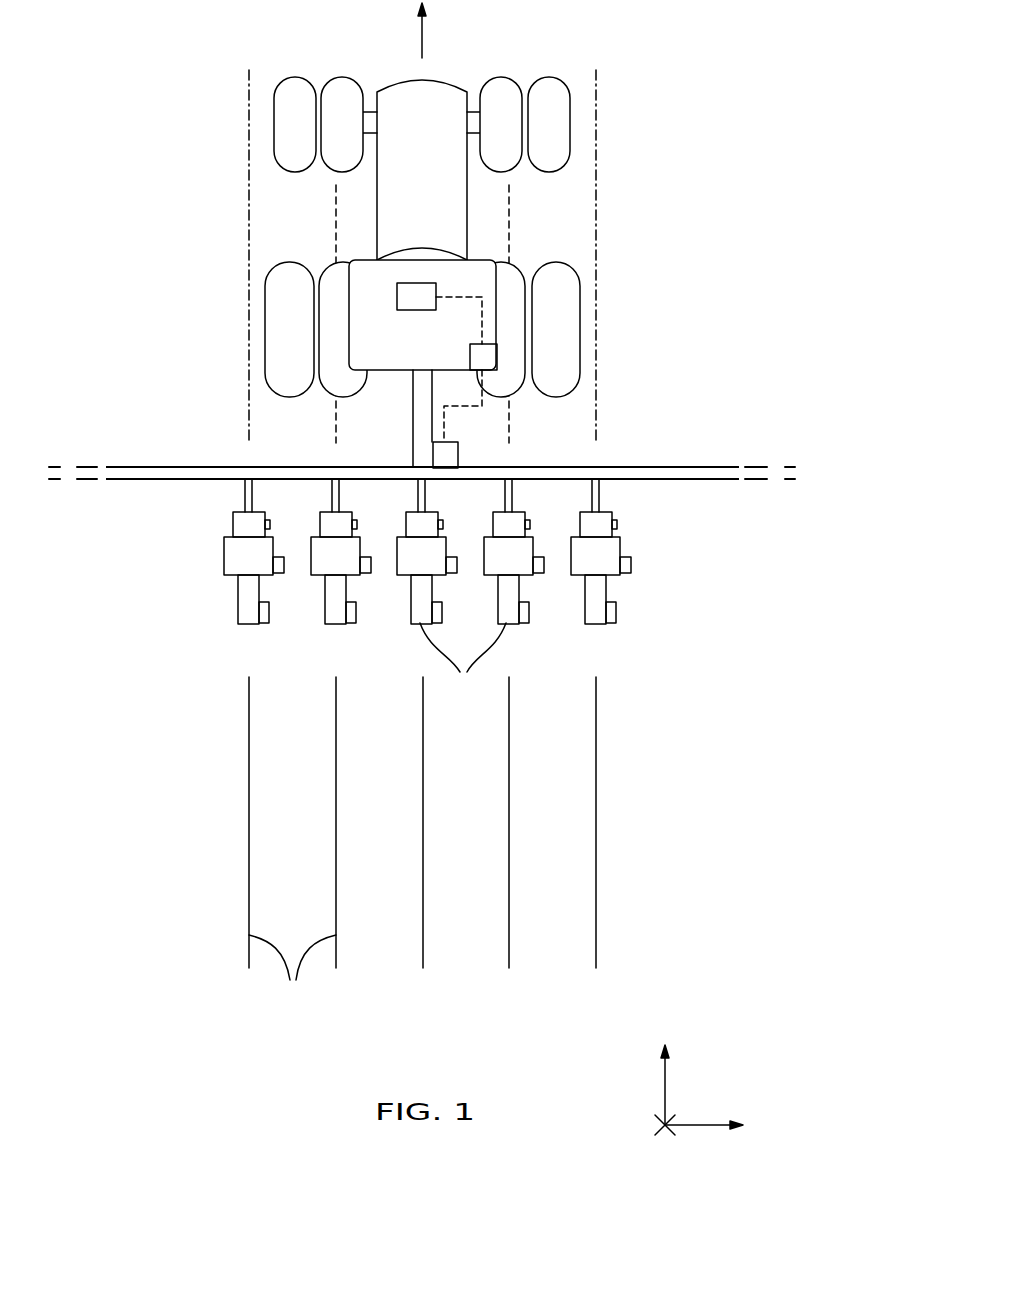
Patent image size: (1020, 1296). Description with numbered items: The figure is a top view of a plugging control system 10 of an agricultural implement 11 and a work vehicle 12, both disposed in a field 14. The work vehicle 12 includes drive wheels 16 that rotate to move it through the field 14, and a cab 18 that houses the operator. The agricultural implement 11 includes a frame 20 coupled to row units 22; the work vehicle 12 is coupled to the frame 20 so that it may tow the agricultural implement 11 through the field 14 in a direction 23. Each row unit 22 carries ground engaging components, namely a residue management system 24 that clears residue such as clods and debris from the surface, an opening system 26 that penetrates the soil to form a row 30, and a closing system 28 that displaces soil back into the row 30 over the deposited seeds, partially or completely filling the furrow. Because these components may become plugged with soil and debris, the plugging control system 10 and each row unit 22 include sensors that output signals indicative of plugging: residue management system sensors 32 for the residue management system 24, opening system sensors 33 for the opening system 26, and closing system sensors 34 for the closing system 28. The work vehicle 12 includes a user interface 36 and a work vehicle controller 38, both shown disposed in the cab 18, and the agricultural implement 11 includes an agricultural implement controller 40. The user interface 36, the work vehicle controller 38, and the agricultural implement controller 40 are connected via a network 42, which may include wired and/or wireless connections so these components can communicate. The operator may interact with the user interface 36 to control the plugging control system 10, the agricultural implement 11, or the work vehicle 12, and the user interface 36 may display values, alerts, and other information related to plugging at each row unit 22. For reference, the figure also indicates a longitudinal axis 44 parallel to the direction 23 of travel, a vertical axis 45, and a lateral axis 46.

The plugging control system 10 is at (725, 532).
The agricultural implement 11 is at (745, 455).
The work vehicle 12 is at (453, 237).
The field 14 is at (655, 36).
The drive wheels 16 is at (333, 272).
The cab 18 is at (370, 278).
The frame 20 is at (708, 467).
The row units 22 is at (495, 524).
The direction 23 is at (422, 33).
The residue management system 24 is at (233, 522).
The opening system 26 is at (360, 550).
The closing system 28 is at (463, 663).
The row 30 is at (422, 843).
The residue management system sensor 32 is at (270, 525).
The opening system sensor 33 is at (284, 563).
The closing system sensor 34 is at (465, 614).
The user interface 36 is at (436, 290).
The work vehicle controller 38 is at (485, 344).
The agricultural implement controller 40 is at (458, 455).
The network 42 is at (451, 432).
The longitudinal axis 44 is at (665, 1090).
The vertical axis 45 is at (658, 1121).
The lateral axis 46 is at (700, 1128).